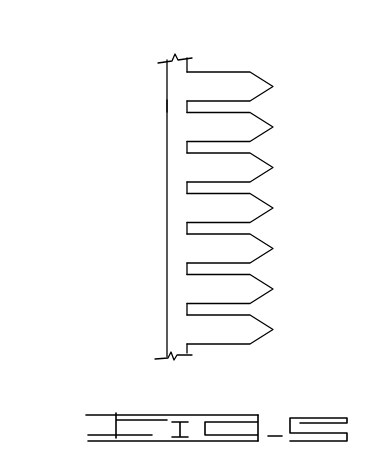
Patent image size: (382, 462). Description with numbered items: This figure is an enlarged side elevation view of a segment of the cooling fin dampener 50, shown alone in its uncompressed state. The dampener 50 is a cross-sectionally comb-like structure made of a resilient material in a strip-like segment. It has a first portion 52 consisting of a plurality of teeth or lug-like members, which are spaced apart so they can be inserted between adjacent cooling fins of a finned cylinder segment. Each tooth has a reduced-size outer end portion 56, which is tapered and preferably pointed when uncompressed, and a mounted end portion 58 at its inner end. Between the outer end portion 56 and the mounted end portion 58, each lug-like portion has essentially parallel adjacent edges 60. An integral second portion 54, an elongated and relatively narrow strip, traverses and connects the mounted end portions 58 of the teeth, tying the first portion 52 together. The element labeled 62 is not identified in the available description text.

The cooling fin dampener 50 is at (193, 221).
The first portion 52 is at (262, 340).
The second portion 54 is at (147, 285).
The outer end portion 56 is at (255, 167).
The mounted end portion 58 is at (193, 247).
The adjacent edges 60 is at (240, 223).
The base plate 62 is at (173, 102).